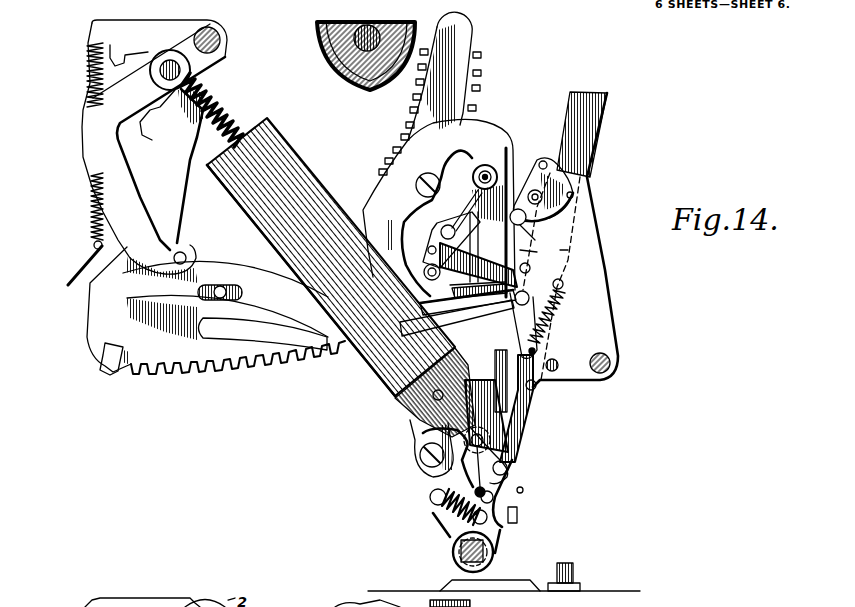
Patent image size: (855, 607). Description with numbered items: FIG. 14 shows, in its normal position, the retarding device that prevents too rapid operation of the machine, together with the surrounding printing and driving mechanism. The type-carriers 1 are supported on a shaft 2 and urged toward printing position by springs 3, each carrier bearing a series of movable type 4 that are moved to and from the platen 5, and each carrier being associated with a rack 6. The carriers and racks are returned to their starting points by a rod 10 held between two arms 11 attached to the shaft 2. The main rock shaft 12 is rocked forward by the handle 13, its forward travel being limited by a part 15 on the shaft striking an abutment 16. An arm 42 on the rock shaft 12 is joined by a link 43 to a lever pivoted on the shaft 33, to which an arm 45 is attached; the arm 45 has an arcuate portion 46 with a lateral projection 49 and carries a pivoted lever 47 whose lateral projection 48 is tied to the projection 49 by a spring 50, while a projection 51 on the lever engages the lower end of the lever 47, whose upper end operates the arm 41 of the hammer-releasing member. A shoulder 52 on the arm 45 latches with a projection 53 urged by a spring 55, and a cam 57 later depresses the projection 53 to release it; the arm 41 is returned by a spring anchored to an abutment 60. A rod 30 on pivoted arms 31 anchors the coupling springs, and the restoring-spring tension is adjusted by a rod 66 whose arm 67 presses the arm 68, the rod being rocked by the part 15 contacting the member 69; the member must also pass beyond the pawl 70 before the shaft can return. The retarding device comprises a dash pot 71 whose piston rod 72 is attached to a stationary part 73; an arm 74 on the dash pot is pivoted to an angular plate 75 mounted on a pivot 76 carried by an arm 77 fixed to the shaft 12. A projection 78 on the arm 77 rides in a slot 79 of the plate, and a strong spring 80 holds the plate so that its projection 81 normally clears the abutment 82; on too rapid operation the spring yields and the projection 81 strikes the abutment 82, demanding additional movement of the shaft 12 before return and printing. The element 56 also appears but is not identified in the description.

The type-carriers 1 is at (417, 144).
The shaft 2 is at (217, 38).
The springs 3 is at (93, 72).
The movable type 4 is at (418, 93).
The platen 5 is at (347, 70).
The rack 6 is at (216, 311).
The rod 10 is at (186, 255).
The arms 11 is at (154, 147).
The rock shaft 12 is at (460, 550).
The handle 13 is at (598, 135).
The part 15 is at (528, 517).
The abutment 16 is at (523, 582).
The rod 30 is at (572, 252).
The pivoted arms 31 is at (538, 252).
The shaft 33 is at (488, 185).
The arm 41 is at (543, 169).
The arm 42 is at (422, 470).
The link 43 is at (420, 417).
The arm 45 is at (467, 210).
The arcuate portion 46 is at (475, 296).
The pivoted lever 47 is at (464, 246).
The lateral projection 48 is at (432, 250).
The lateral projection 49 is at (531, 270).
The spring 50 is at (472, 243).
The projection 51 is at (457, 300).
The shoulder 52 is at (464, 291).
The projection 53 is at (521, 307).
The spring 55 is at (547, 330).
The link 56 is at (538, 235).
The cam 57 is at (468, 306).
The abutment 60 is at (573, 193).
The rod 66 is at (555, 360).
The arm 67 is at (472, 265).
The arm 68 is at (512, 358).
The member 69 is at (536, 386).
The pawl 70 is at (540, 200).
The dash pot 71 is at (331, 257).
The piston rod 72 is at (233, 110).
The stationary part 73 is at (170, 60).
The arm 74 is at (400, 417).
The angular plate 75 is at (490, 488).
The pivot 76 is at (503, 468).
The arm 77 is at (498, 533).
The projection 78 is at (493, 497).
The slot 79 is at (491, 471).
The strong spring 80 is at (472, 518).
The projection 81 is at (520, 490).
The abutment 82 is at (572, 567).